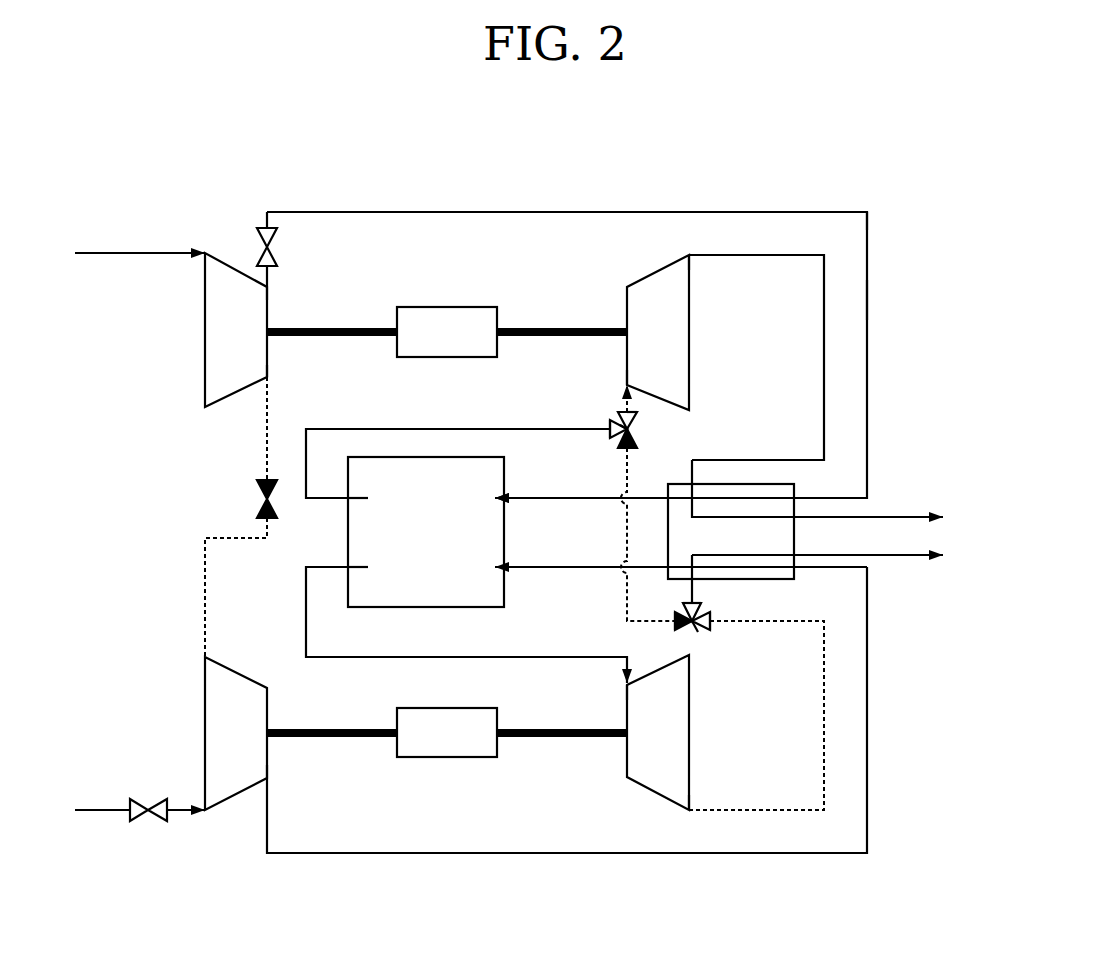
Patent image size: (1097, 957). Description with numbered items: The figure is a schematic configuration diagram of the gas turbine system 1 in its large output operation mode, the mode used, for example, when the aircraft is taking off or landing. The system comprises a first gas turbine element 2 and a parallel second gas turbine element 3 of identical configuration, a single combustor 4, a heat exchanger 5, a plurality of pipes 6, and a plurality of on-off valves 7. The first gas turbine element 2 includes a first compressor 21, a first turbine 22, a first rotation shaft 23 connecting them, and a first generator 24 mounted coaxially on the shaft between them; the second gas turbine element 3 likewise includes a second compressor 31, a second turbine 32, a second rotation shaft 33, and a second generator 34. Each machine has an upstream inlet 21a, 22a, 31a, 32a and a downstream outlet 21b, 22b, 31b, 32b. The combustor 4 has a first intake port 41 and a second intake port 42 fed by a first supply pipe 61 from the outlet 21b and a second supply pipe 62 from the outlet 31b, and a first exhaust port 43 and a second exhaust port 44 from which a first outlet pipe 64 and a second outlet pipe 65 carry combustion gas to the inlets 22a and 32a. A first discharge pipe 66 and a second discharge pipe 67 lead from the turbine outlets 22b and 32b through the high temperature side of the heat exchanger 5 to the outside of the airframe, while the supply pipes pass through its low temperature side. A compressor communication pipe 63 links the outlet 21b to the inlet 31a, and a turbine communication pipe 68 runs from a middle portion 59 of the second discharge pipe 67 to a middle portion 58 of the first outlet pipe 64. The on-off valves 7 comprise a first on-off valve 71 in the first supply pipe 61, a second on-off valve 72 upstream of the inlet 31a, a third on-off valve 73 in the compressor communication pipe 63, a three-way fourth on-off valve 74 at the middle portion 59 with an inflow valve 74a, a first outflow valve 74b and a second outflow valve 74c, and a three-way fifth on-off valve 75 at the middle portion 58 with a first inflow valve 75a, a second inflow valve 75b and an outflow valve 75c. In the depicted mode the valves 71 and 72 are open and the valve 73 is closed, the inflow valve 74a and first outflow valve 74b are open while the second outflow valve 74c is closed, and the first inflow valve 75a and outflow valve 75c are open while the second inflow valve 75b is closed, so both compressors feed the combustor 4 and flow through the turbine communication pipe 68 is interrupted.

The gas turbine system 1 is at (812, 163).
The first gas turbine element 2 is at (180, 337).
The second gas turbine element 3 is at (178, 724).
The combustor 4 is at (442, 455).
The heat exchanger 5 is at (756, 482).
The pipes 6 is at (585, 210).
The on-off valves 7 is at (133, 826).
The first compressor 21 is at (232, 268).
The inlet of first compressor 21a is at (205, 253).
The outlet of first compressor 21b is at (267, 289).
The first turbine 22 is at (657, 272).
The inlet of first turbine 22a is at (622, 390).
The outlet of first turbine 22b is at (692, 256).
The first rotation shaft 23 is at (368, 328).
The first generator 24 is at (455, 307).
The second compressor 31 is at (232, 796).
The inlet of second compressor 31a is at (205, 657).
The outlet of second compressor 31b is at (267, 778).
The second turbine 32 is at (660, 796).
The inlet of second turbine 32a is at (625, 685).
The outlet of second turbine 32b is at (692, 810).
The second rotation shaft 33 is at (565, 738).
The second generator 34 is at (443, 757).
The first intake port 41 is at (506, 497).
The second intake port 42 is at (506, 569).
The first exhaust port 43 is at (348, 497).
The second exhaust port 44 is at (348, 566).
The middle portion of first outlet pipe 58 is at (620, 425).
The middle portion of second discharge pipe 59 is at (696, 628).
The first supply pipe 61 is at (867, 297).
The second supply pipe 62 is at (525, 853).
The compressor communication pipe 63 is at (205, 570).
The first outlet pipe 64 is at (365, 429).
The second outlet pipe 65 is at (348, 657).
The first discharge pipe 66 is at (824, 360).
The second discharge pipe 67 is at (824, 648).
The turbine communication pipe 68 is at (627, 533).
The first on-off valve 71 is at (260, 248).
The second on-off valve 72 is at (152, 820).
The third on-off valve 73 is at (262, 497).
The fourth on-off valve 74 is at (702, 630).
The inflow valve 74a is at (712, 618).
The first outflow valve 74b is at (686, 605).
The second outflow valve 74c is at (680, 625).
The fifth on-off valve 75 is at (625, 412).
The first inflow valve 75a is at (610, 434).
The second inflow valve 75b is at (635, 437).
The outflow valve 75c is at (637, 418).